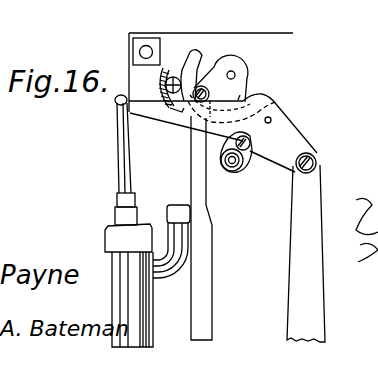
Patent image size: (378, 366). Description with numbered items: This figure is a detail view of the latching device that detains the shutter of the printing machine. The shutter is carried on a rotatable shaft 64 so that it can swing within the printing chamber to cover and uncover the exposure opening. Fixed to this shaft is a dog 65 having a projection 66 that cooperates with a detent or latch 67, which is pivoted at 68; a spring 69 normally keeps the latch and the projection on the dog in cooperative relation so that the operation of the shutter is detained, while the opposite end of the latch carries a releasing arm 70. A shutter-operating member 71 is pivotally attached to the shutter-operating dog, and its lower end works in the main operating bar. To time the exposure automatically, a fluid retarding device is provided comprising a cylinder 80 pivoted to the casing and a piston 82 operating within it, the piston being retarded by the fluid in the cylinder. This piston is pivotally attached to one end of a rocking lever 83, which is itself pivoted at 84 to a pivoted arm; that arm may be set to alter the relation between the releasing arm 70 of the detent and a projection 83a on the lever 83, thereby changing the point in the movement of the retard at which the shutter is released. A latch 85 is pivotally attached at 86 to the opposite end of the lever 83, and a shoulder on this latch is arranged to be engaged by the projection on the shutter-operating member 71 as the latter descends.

The rotatable shaft 64 is at (233, 71).
The dog 65 is at (229, 92).
The projection 66 is at (195, 76).
The detent or latch 67 is at (195, 51).
The pivot 68 is at (173, 77).
The spring 69 is at (158, 90).
The releasing arm 70 is at (258, 100).
The shutter-operating member 71 is at (212, 255).
The cylinder 80 is at (153, 296).
The piston 82 is at (129, 170).
The rocking lever 83 is at (152, 117).
The projection 83a is at (271, 117).
The pivot 84 is at (253, 141).
The latch 85 is at (306, 253).
The pivot 86 is at (318, 160).